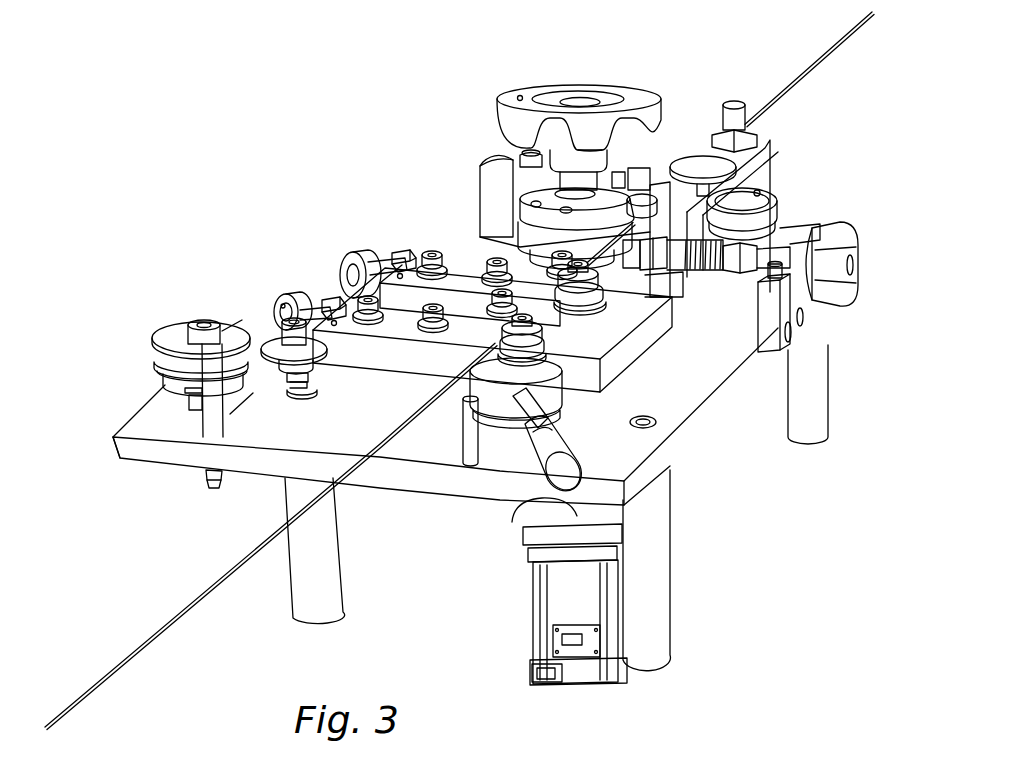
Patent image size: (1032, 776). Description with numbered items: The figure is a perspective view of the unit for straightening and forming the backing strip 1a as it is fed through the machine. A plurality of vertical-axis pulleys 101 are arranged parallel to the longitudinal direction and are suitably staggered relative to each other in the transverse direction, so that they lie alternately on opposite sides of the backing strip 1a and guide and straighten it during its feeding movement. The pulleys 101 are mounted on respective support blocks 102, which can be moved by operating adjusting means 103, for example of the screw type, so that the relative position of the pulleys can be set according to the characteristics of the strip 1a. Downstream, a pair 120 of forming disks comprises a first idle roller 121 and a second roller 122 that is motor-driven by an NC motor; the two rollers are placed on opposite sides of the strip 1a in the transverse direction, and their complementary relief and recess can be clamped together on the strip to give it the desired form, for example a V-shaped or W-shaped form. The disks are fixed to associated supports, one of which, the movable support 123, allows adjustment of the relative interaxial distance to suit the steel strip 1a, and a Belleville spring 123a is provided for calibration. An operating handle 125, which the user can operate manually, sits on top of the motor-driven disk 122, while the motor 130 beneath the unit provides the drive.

The backing strip 1a is at (131, 656).
The vertical-axis pulleys 101 is at (558, 340).
The support blocks 102 is at (323, 280).
The adjusting means 103 is at (343, 255).
The pair of forming disks 120 is at (678, 133).
The first idle roller 121 is at (777, 207).
The second roller 122 is at (513, 212).
The movable support 123 is at (788, 288).
The Belleville spring 123a is at (708, 270).
The operating handle 125 is at (536, 83).
The motor 130 is at (607, 618).